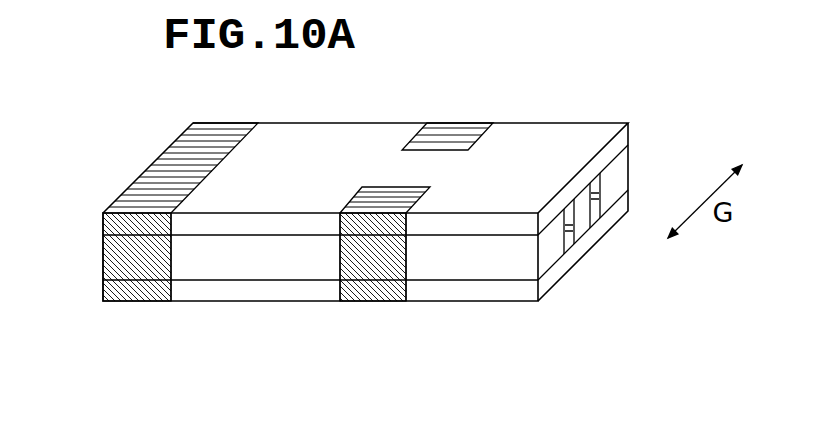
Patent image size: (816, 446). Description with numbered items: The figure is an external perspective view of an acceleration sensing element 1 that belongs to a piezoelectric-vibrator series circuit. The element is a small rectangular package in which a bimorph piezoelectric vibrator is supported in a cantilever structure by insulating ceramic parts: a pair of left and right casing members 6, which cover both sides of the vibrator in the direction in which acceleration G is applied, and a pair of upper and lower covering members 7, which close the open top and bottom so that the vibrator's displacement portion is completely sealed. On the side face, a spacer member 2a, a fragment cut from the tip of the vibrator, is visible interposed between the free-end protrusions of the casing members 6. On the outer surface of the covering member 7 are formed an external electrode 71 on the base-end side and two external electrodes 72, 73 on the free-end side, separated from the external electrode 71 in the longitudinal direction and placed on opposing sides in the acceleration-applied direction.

The acceleration sensing element 1 is at (132, 132).
The spacer member 2a is at (583, 223).
The casing member 6 is at (622, 172).
The covering member 7 is at (332, 137).
The external electrode 71 is at (212, 137).
The external electrode 72 is at (403, 202).
The external electrode 73 is at (455, 137).